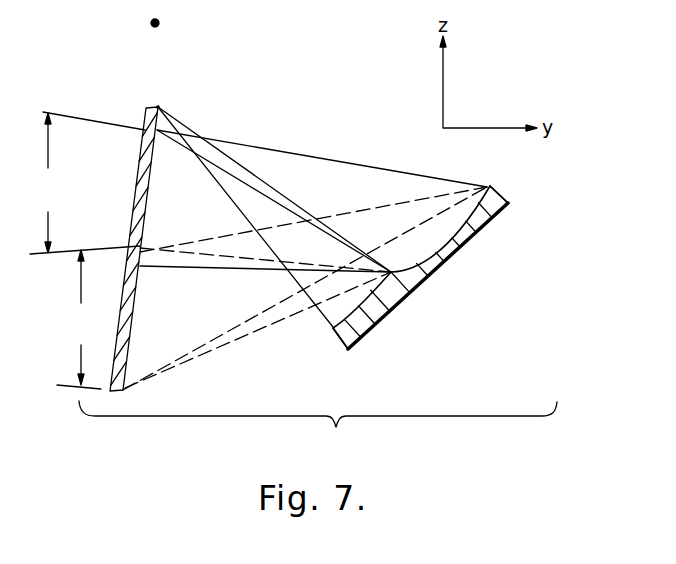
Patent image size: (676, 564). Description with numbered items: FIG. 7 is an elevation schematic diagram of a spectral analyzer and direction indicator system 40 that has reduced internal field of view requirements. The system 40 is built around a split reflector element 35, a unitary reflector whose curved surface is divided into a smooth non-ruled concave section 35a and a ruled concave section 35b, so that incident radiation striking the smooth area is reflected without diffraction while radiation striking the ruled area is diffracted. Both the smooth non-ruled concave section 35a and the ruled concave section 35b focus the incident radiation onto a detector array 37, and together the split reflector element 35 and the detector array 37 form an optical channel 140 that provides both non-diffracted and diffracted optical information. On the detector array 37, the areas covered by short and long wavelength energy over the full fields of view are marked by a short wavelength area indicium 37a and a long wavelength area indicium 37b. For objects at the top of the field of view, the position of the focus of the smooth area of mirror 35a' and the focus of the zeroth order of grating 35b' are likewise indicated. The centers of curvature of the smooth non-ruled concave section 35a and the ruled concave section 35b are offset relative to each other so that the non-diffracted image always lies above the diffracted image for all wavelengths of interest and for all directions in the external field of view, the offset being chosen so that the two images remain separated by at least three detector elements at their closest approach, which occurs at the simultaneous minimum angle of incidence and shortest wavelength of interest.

The split reflector element 35 is at (481, 280).
The smooth non-ruled concave section 35a is at (332, 354).
The ruled concave section 35b is at (509, 178).
The focus of the smooth area of mirror 35a' is at (187, 94).
The focus of the zeroth order of grating 35b' is at (189, 19).
The detector array 37 is at (151, 100).
The short wavelength area indicium 37a is at (87, 183).
The long wavelength area indicium 37b is at (79, 319).
The spectral analyzer and direction indicator system 40 is at (556, 372).
The optical channel 140 is at (318, 430).